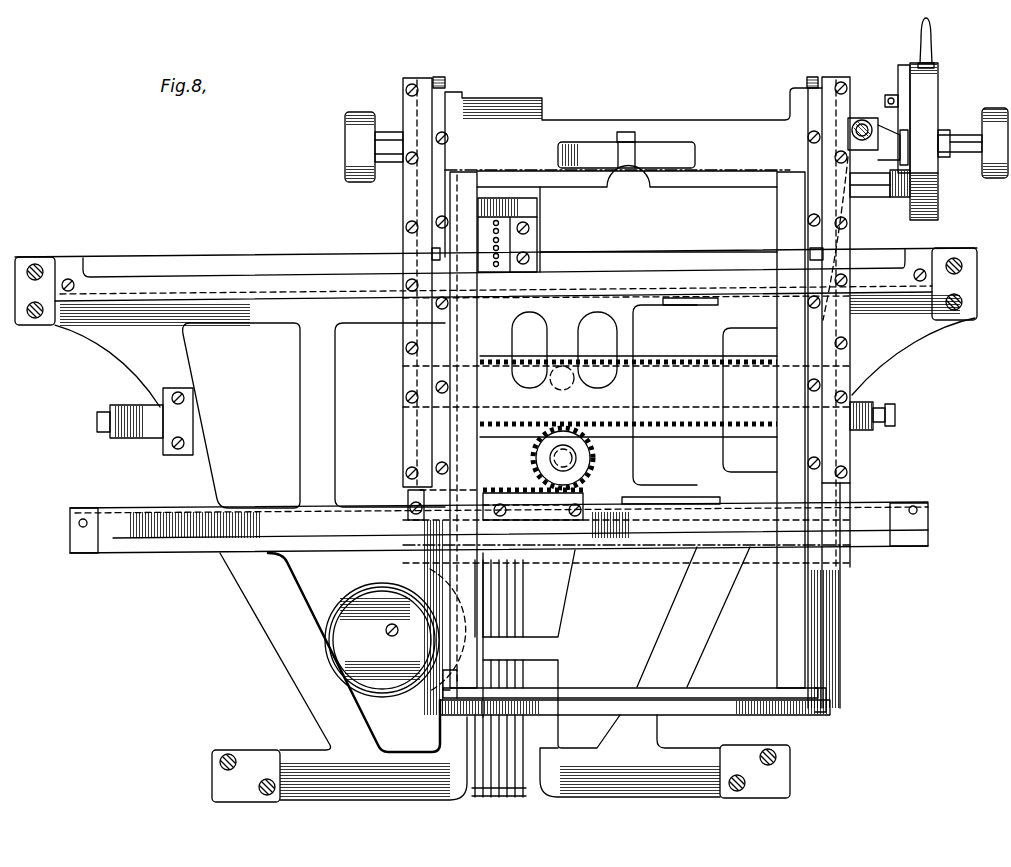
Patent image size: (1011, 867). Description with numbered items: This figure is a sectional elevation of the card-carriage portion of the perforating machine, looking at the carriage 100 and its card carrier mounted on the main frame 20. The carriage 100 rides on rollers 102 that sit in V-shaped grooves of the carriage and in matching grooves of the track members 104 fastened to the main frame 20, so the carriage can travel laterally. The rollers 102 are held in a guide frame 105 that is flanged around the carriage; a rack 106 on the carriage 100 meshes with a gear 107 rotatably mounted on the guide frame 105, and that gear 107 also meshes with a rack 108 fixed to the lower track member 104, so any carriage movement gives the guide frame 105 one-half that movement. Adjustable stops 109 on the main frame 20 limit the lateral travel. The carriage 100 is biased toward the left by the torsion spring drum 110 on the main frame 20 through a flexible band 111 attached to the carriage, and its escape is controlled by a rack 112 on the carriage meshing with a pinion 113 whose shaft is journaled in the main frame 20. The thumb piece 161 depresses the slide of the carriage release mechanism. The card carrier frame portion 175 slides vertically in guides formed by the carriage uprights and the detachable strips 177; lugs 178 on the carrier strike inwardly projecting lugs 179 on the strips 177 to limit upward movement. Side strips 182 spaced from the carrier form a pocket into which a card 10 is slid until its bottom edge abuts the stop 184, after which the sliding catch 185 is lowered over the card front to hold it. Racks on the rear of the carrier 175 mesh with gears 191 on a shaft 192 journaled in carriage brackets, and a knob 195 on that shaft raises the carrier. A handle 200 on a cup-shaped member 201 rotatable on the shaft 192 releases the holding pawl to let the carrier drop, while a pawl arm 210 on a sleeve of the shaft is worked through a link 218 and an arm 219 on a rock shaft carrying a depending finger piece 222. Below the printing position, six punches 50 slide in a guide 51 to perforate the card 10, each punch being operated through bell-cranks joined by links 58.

The card 10 is at (527, 172).
The main frame 20 is at (262, 600).
The perforating devices or punches 50 is at (500, 262).
The guide 51 is at (503, 223).
The links 58 is at (512, 757).
The carriage 100 is at (712, 453).
The rollers 102 is at (705, 297).
The track members 104 is at (197, 283).
The guide frame 105 is at (625, 440).
The rack 106 is at (653, 412).
The gear 107 is at (583, 465).
The rack 108 is at (410, 495).
The adjustable stops 109 is at (128, 407).
The torsion spring drum 110 is at (395, 633).
The flexible band 111 is at (623, 566).
The rack 112 is at (642, 355).
The pinion 113 is at (575, 379).
The thumb piece 161 is at (403, 130).
The frame portion (card carrier) 175 is at (583, 132).
The plates or strips 177 is at (412, 435).
The lugs 178 is at (455, 685).
The inwardly projecting lugs 179 is at (432, 254).
The side strips 182 is at (777, 222).
The stop 184 is at (588, 688).
The catch 185 is at (633, 135).
The gears 191 is at (440, 77).
The shaft 192 is at (965, 143).
The knob 195 is at (345, 160).
The handle 200 is at (935, 38).
The cup-shaped member 201 is at (925, 105).
The pawl arm 210 is at (898, 80).
The link 218 is at (902, 140).
The arm 219 is at (862, 120).
The finger piece 222 is at (900, 248).